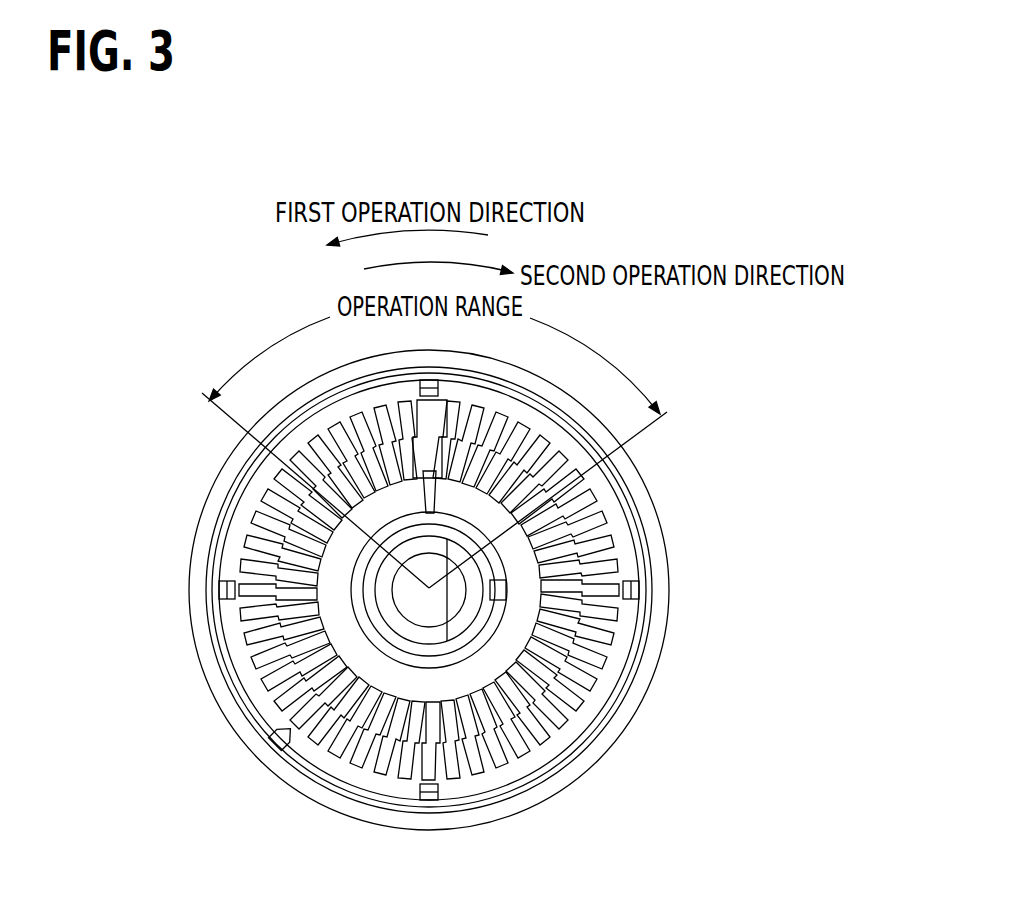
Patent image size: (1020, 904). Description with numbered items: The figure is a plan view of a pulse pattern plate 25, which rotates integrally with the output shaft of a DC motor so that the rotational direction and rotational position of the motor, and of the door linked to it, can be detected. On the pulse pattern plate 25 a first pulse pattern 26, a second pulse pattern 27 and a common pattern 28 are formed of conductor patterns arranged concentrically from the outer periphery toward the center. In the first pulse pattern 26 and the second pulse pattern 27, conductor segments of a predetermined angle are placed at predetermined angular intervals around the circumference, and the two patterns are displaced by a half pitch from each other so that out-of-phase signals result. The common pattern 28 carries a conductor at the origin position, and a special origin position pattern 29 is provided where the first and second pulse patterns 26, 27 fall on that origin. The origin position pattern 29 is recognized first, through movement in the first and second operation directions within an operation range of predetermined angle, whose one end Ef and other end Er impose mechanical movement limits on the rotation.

The pulse pattern plate 25 is at (194, 548).
The first pulse pattern 26 is at (496, 590).
The second pulse pattern 27 is at (550, 548).
The common pattern 28 is at (428, 487).
The origin position pattern 29 is at (443, 408).
The one end of the operation range Ef is at (299, 478).
The other end of the operation range Er is at (564, 485).